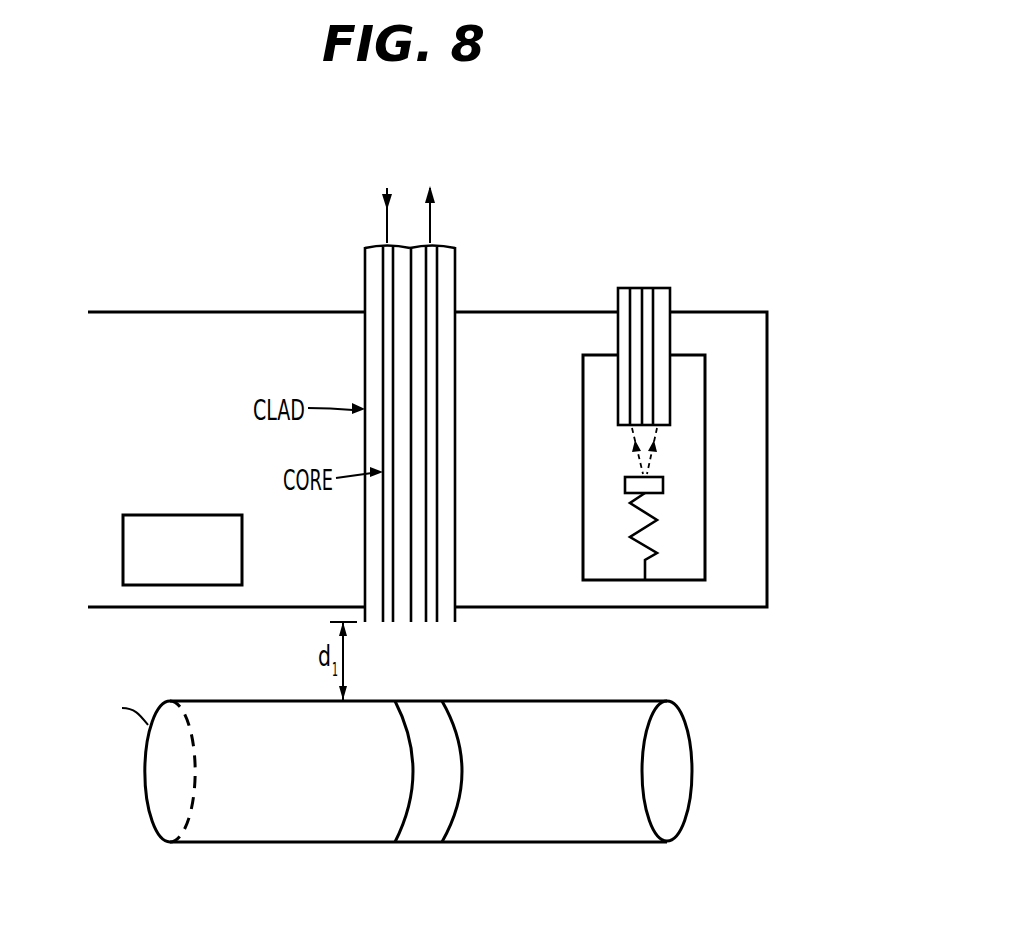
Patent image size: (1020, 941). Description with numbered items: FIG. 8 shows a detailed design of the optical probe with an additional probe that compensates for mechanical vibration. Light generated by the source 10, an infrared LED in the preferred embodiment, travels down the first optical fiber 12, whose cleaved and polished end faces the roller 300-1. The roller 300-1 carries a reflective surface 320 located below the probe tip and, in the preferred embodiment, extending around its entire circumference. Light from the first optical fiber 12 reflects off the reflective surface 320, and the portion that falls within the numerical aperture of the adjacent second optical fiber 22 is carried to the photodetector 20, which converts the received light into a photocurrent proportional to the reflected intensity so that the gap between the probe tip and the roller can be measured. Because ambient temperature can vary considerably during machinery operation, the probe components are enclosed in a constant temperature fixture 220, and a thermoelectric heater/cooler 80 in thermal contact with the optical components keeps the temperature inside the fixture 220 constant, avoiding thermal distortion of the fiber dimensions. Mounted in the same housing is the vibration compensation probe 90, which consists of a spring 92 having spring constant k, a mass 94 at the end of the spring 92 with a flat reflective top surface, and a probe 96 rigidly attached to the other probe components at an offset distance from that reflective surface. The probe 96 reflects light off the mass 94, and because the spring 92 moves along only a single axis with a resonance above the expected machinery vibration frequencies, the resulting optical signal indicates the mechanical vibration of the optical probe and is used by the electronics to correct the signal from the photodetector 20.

The light source 10 is at (332, 204).
The photodetector 20 is at (501, 204).
The first optical fiber 12 is at (365, 357).
The second optical fiber 22 is at (455, 363).
The heater/cooler 80 is at (242, 530).
The vibration compensation probe 90 is at (583, 458).
The spring 92 is at (644, 544).
The mass 94 is at (626, 482).
The probe 96 is at (618, 402).
The constant temperature fixture 220 is at (767, 483).
The roller 300-1 is at (590, 843).
The reflective surface 320 is at (415, 700).